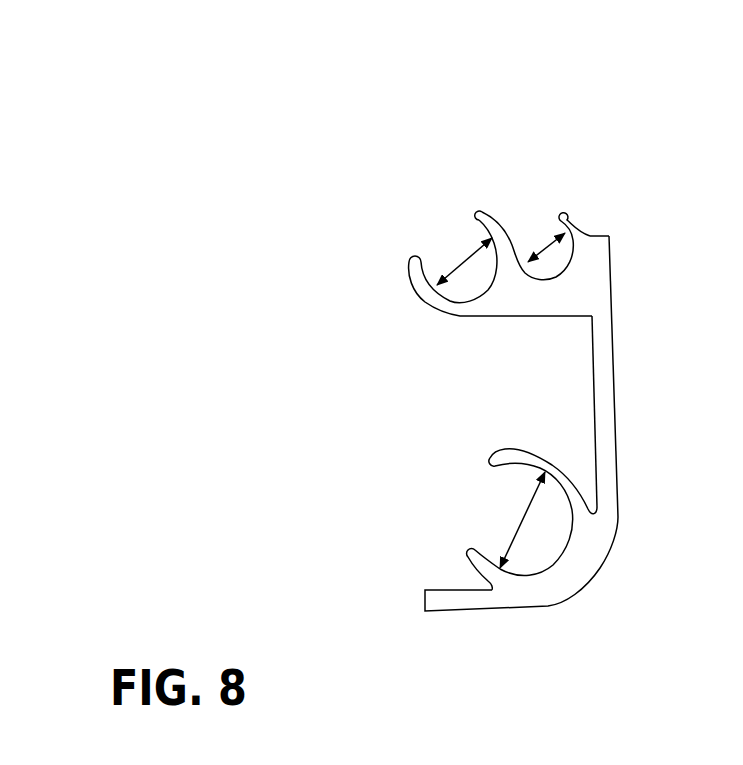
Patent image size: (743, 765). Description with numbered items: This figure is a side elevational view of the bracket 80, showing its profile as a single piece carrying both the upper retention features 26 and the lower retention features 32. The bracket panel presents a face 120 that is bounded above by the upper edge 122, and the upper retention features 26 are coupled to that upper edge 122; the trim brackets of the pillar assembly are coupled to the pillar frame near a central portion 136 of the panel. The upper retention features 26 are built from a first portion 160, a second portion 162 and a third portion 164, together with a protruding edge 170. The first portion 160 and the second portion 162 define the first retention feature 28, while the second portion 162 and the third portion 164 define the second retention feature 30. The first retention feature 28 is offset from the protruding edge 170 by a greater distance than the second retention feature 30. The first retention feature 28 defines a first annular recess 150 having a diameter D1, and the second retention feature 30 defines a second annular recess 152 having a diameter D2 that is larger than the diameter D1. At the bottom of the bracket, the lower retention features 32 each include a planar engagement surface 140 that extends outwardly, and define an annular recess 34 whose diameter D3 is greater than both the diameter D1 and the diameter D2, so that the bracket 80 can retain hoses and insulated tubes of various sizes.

The bracket 80 is at (623, 137).
The second annular recess 152 is at (452, 235).
The second portion 162 is at (473, 208).
The third portion 164 is at (408, 275).
The first annular recess 150 is at (545, 218).
The first retention feature 28 is at (563, 211).
The first portion 160 is at (580, 226).
The upper edge 122 is at (601, 233).
The upper retention features 26 is at (575, 290).
The central portion 136 is at (607, 415).
The face 120 is at (592, 404).
The protruding edge 170 is at (547, 318).
The second retention feature 30 is at (457, 313).
The annular recess 34 is at (490, 534).
The lower retention features 32 is at (507, 578).
The planar engagement surface 140 is at (422, 600).
The diameter of the first annular recess D1 is at (528, 258).
The diameter of the second annular recess D2 is at (458, 262).
The diameter of the lower retention features D3 is at (523, 513).